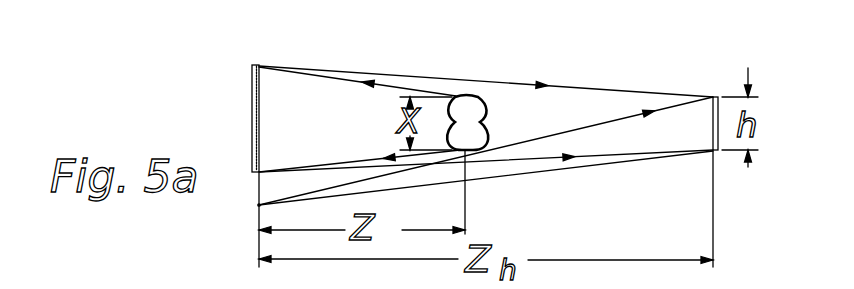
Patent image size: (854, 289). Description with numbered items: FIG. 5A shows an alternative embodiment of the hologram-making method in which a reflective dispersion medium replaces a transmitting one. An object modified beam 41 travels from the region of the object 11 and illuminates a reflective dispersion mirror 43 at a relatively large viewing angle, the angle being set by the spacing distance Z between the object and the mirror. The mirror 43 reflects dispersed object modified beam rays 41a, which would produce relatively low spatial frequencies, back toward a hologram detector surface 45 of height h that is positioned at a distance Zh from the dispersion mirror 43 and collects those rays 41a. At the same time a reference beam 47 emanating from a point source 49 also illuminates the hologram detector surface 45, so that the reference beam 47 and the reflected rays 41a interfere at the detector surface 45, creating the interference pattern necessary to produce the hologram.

The reflective dispersion mirror 43 is at (251, 80).
The hologram detector surface 45 is at (714, 96).
The cross-section of laser beam / active medium 11 is at (465, 97).
The object modified beam 41 is at (371, 83).
The reflected dispersed object modified beam rays 41a is at (538, 157).
The reference beam 47 is at (614, 163).
The point source 49 is at (259, 205).